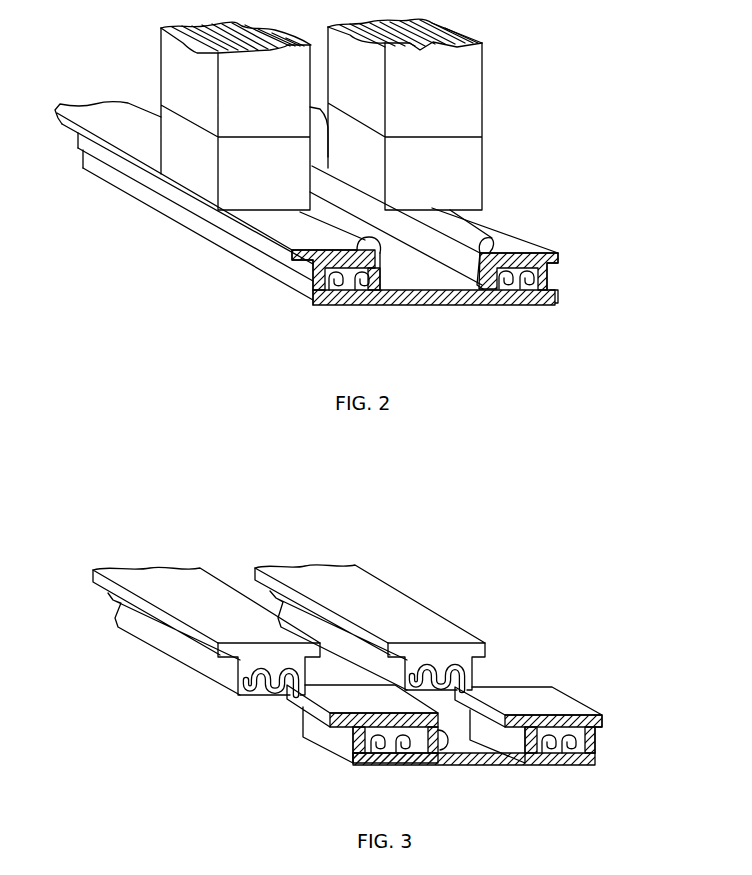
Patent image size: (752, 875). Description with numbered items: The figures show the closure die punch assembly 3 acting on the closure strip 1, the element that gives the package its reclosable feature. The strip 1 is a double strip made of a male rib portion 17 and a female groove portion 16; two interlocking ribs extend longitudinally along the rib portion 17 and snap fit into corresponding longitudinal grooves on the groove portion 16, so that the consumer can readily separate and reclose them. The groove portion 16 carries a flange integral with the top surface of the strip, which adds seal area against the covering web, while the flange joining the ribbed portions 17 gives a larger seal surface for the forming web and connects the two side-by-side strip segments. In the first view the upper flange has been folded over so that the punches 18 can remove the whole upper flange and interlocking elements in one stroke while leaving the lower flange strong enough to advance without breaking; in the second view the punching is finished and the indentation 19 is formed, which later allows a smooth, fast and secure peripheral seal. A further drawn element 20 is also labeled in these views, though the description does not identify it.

In FIG. 2, the closure strip 1 is at (580, 284).
In FIG. 3, the closure strip 1 is at (608, 738).
In FIG. 2, the closure die punch assembly 3 is at (515, 72).
In FIG. 2, the groove portion 16 is at (508, 228).
In FIG. 3, the groove portion 16 is at (410, 606).
In FIG. 2, the rib portion 17 is at (338, 306).
In FIG. 3, the rib portion 17 is at (347, 755).
In FIG. 2, the punches 18 is at (161, 63).
In FIG. 3, the indentation 19 is at (483, 665).
In FIG. 2, the locking lip 20 is at (455, 212).
In FIG. 3, the locking lip 20 is at (470, 700).